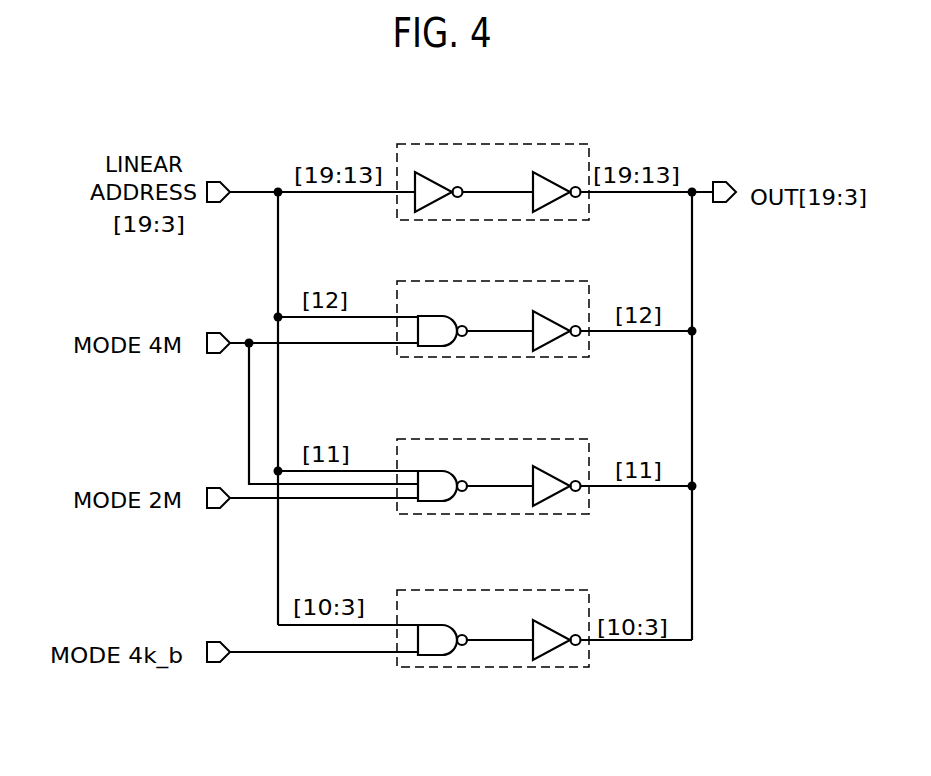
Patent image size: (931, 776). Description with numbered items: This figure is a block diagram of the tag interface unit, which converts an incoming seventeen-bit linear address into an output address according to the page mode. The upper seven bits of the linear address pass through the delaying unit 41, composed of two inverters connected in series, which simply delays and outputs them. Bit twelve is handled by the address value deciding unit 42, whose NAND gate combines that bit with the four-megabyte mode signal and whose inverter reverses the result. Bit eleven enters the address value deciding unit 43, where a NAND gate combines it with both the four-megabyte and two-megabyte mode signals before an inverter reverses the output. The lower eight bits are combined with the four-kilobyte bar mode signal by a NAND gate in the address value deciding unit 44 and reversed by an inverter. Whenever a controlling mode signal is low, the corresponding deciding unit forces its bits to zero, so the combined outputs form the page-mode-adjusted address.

The delaying unit 41 is at (509, 143).
The address value deciding unit 42 is at (513, 280).
The address value deciding unit 43 is at (511, 438).
The address value deciding unit 44 is at (511, 589).